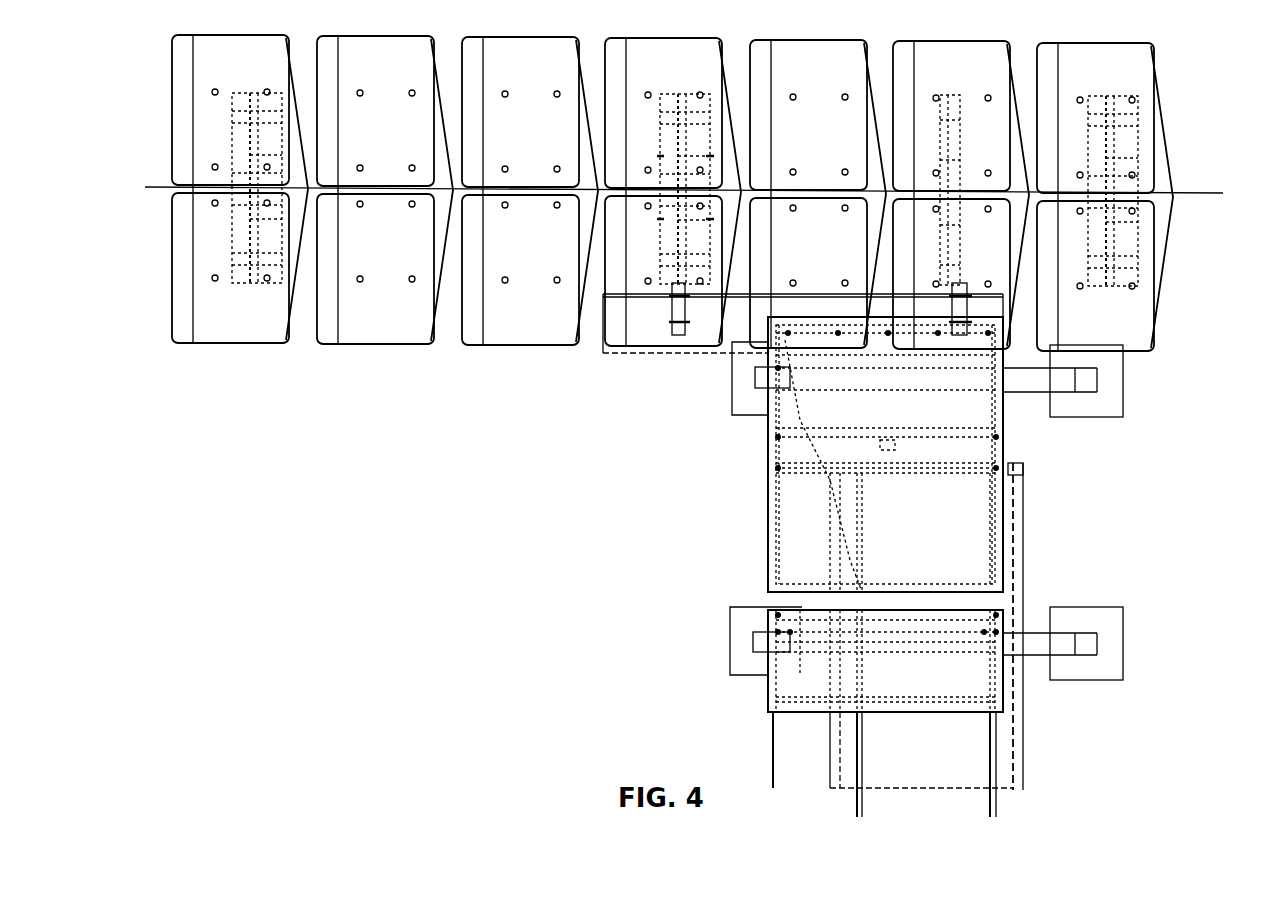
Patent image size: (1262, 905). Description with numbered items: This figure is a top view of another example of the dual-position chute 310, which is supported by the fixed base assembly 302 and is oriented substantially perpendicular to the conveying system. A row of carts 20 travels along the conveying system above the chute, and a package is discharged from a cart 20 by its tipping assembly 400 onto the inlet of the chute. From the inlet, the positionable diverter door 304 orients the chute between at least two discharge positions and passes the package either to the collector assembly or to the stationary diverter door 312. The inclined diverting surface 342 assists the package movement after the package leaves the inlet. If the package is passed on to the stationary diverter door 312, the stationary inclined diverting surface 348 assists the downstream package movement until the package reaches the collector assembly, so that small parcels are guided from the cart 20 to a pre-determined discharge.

The cart 20 is at (515, 330).
The tipping assembly 400 is at (250, 127).
The dual-position chute 310 is at (436, 552).
The fixed base assembly 302 is at (1117, 390).
The positionable diverter door 304 is at (1005, 415).
The inclined diverting surface 342 is at (830, 537).
The stationary inclined diverting surface 348 is at (855, 672).
The stationary diverter door 312 is at (1010, 680).